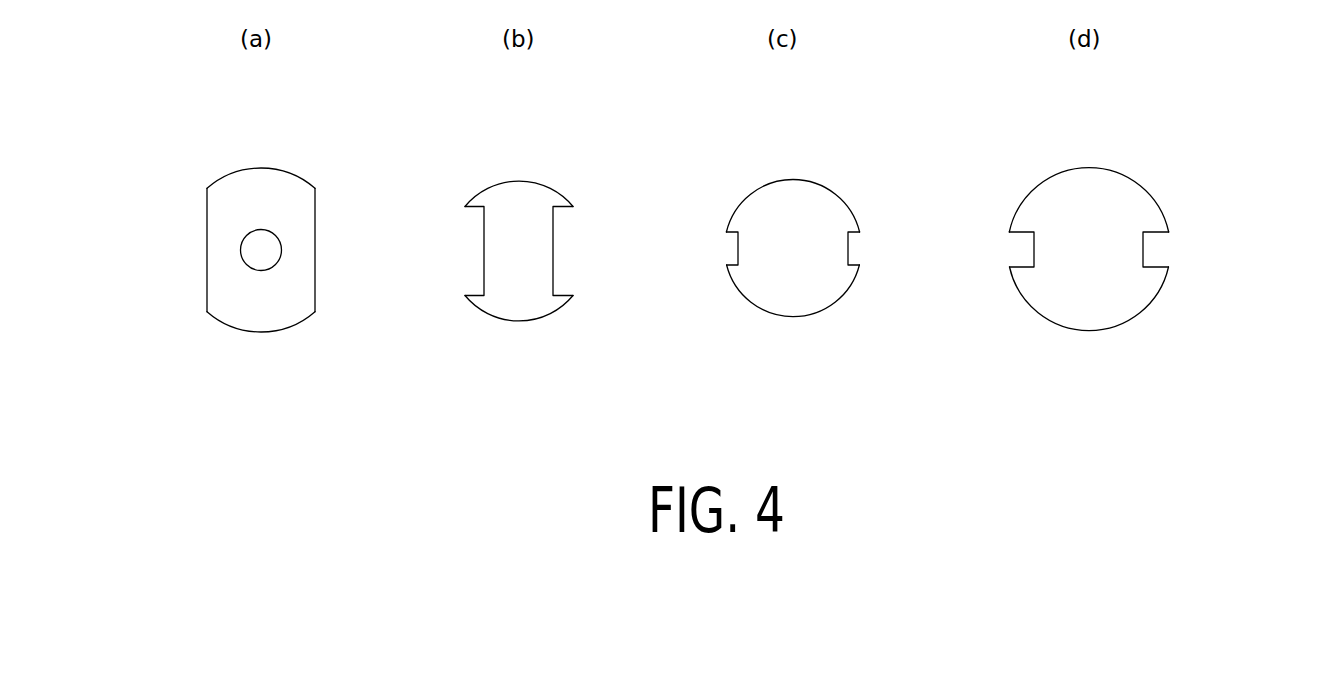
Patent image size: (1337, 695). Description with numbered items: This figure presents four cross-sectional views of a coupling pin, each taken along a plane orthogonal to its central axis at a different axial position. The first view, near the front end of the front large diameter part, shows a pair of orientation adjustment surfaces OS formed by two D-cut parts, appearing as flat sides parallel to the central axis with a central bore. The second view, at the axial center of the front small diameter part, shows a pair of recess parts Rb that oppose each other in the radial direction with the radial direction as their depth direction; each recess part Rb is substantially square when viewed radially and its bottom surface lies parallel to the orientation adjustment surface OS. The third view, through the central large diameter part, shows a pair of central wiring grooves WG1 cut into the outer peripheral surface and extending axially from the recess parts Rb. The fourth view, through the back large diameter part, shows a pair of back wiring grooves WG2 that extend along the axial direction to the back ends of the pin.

The orientation adjustment surface OS is at (205, 266).
The recess part Rb is at (462, 260).
The central wiring groove WG1 is at (720, 243).
The back wiring groove WG2 is at (1000, 246).